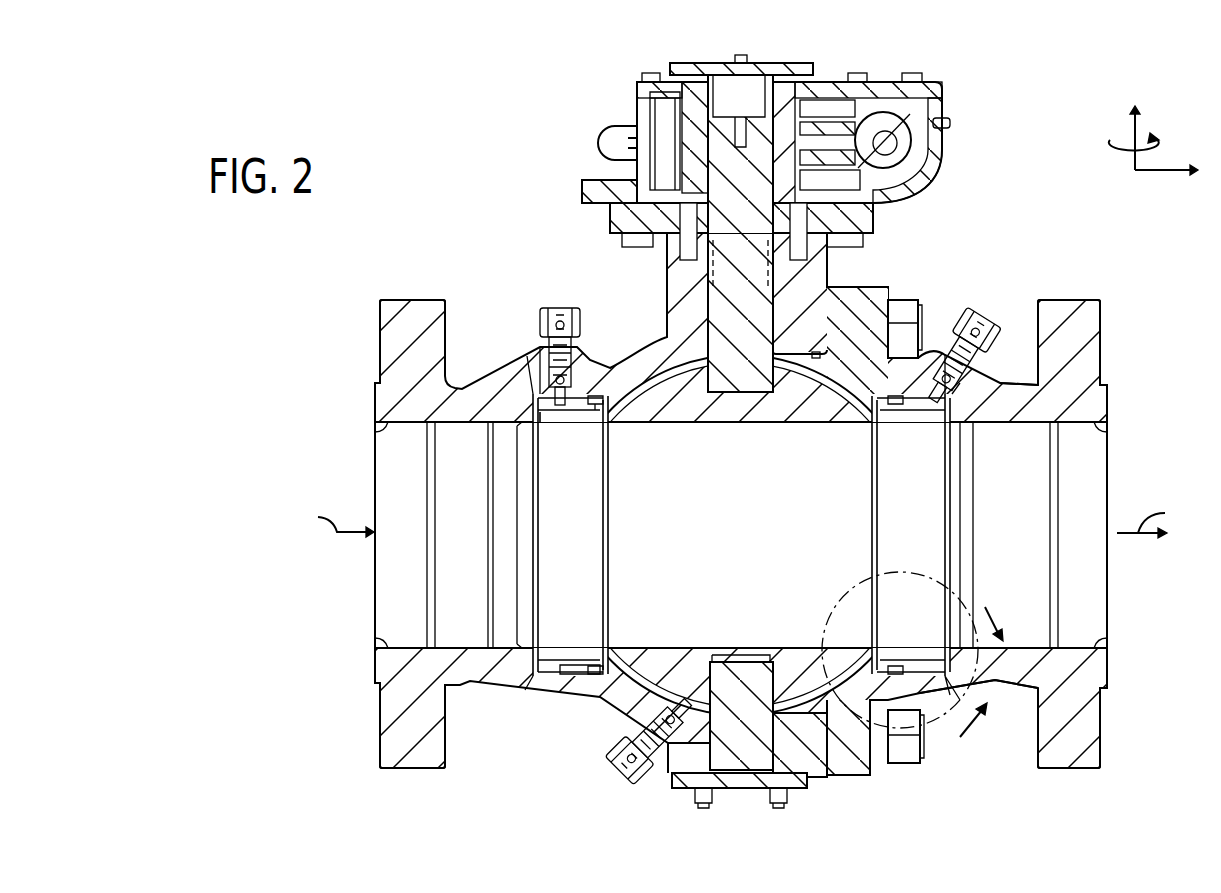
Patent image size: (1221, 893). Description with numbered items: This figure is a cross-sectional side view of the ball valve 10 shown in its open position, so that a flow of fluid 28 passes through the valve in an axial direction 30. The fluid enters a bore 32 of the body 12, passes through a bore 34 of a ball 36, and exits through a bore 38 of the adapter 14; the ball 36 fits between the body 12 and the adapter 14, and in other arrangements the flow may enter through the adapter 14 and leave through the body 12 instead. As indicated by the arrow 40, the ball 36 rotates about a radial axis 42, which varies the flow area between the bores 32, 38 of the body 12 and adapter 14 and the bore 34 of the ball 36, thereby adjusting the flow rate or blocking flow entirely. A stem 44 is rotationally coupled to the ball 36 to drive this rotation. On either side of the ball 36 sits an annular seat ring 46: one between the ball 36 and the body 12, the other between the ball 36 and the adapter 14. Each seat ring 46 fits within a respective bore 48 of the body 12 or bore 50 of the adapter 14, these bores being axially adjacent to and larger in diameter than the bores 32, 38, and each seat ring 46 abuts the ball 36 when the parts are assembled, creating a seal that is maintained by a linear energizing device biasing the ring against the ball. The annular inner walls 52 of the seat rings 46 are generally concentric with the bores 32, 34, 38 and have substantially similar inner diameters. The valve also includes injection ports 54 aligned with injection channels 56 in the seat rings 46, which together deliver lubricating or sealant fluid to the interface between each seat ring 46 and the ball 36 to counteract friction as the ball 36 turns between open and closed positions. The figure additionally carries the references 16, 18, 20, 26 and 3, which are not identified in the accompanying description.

The ball valve 10 is at (461, 182).
The body 12 is at (545, 680).
The adapter 14 is at (1027, 675).
The bolts 16 is at (900, 305).
The inlet flange 18 is at (415, 318).
The outlet flange 20 is at (1085, 340).
The actuator gearbox 26 is at (903, 63).
The flow of fluid 28 is at (738, 518).
The axial direction 30 is at (1160, 172).
The bore of the body 32 is at (375, 443).
The bore of the ball 34 is at (664, 422).
The ball 36 is at (648, 700).
The bore of the adapter 38 is at (1094, 428).
The arrow 40 is at (1112, 150).
The radial axis 42 is at (1133, 172).
The stem 44 is at (758, 322).
The seat ring 46 is at (537, 412).
The bore of the body 48 is at (583, 668).
The bore of the adapter 50 is at (887, 690).
The annular inner wall 52 is at (553, 428).
The injection port 54 is at (560, 308).
The injection channel 56 is at (590, 425).
The section detail 3 is at (918, 659).